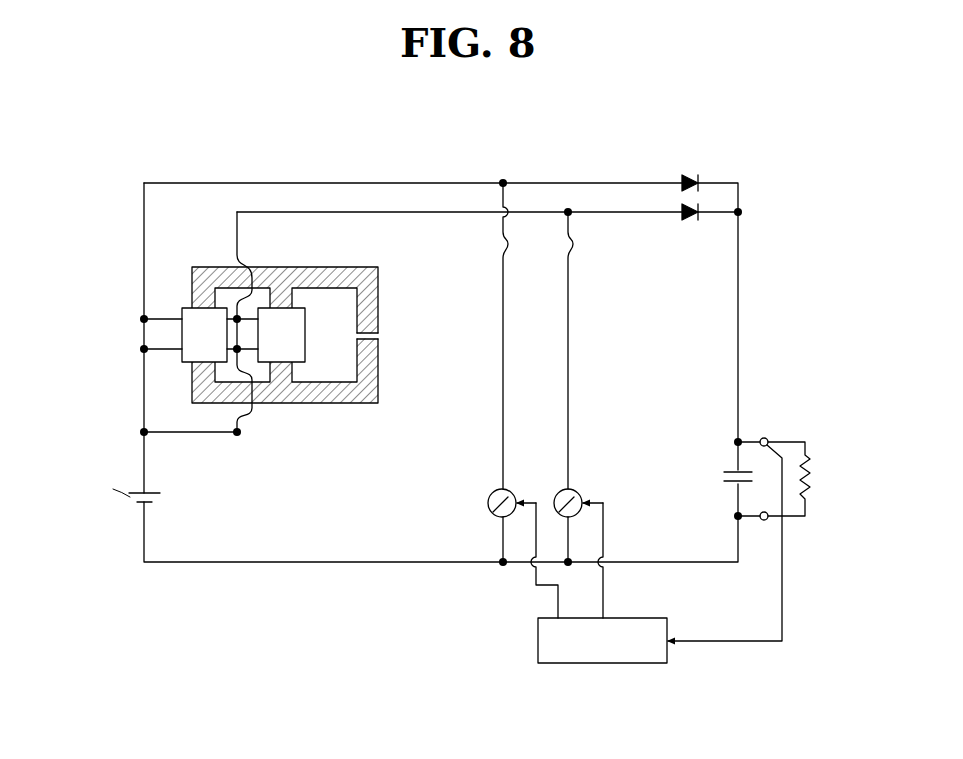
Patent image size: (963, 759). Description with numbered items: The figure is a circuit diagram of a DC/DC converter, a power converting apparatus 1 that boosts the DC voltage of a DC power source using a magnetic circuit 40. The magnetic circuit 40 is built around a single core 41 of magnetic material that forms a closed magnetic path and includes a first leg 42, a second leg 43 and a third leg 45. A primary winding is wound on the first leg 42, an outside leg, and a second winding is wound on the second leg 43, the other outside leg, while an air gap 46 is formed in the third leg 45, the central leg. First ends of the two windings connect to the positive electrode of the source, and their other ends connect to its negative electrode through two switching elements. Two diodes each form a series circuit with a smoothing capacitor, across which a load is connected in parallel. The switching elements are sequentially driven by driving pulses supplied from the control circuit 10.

The power converting apparatus 1 is at (457, 152).
The control circuit 10 is at (538, 638).
The magnetic circuit 40 is at (346, 424).
The core 41 is at (358, 267).
The first leg 42 is at (191, 394).
The second leg 43 is at (283, 385).
The third leg 45 is at (368, 369).
The air gap 46 is at (381, 336).